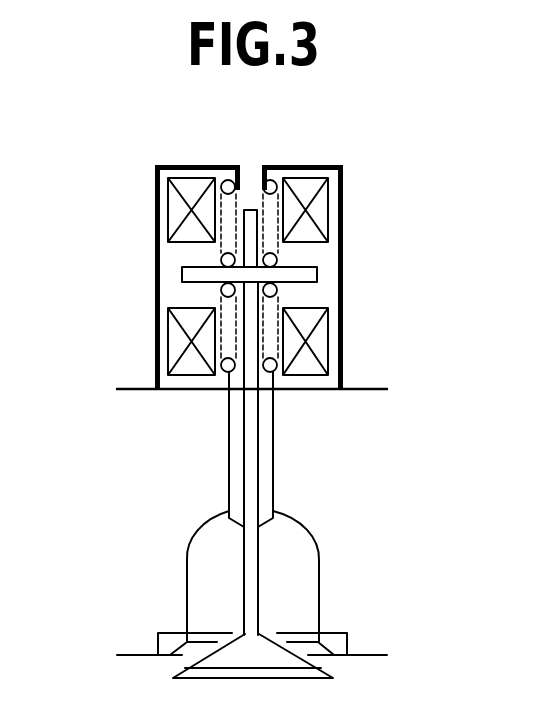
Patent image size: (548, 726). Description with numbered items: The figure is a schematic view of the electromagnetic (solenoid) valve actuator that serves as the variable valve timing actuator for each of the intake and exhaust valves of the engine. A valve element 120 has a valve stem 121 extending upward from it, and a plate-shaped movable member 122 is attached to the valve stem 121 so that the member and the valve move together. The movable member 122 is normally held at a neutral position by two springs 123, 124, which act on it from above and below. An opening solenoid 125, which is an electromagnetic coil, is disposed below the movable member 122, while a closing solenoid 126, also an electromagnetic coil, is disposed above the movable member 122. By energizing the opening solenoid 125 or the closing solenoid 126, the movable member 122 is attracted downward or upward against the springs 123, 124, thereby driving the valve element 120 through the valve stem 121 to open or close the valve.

The valve element 120 is at (332, 674).
The valve stem 121 is at (259, 572).
The movable member 122 is at (318, 273).
The spring 123 is at (222, 249).
The spring 124 is at (222, 288).
The opening solenoid 125 is at (180, 342).
The closing solenoid 126 is at (180, 213).